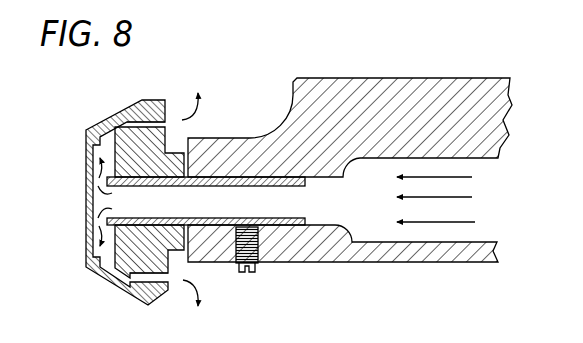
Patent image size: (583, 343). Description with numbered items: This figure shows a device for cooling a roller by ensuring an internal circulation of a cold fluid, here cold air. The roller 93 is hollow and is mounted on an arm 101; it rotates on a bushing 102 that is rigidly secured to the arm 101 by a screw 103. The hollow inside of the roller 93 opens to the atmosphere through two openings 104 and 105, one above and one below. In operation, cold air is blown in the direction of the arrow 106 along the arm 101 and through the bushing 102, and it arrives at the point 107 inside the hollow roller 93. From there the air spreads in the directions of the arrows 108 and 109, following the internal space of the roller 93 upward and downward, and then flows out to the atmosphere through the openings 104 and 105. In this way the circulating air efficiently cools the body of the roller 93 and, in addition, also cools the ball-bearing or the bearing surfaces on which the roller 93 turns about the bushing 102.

The roller 93 is at (135, 103).
The arm 101 is at (394, 100).
The bushing 102 is at (296, 222).
The screw 103 is at (253, 270).
The opening 104 is at (165, 125).
The opening 105 is at (143, 278).
The arrow 106 is at (455, 195).
The arrival point of the air 107 is at (100, 201).
The arrow 108 is at (88, 167).
The arrow 109 is at (90, 237).